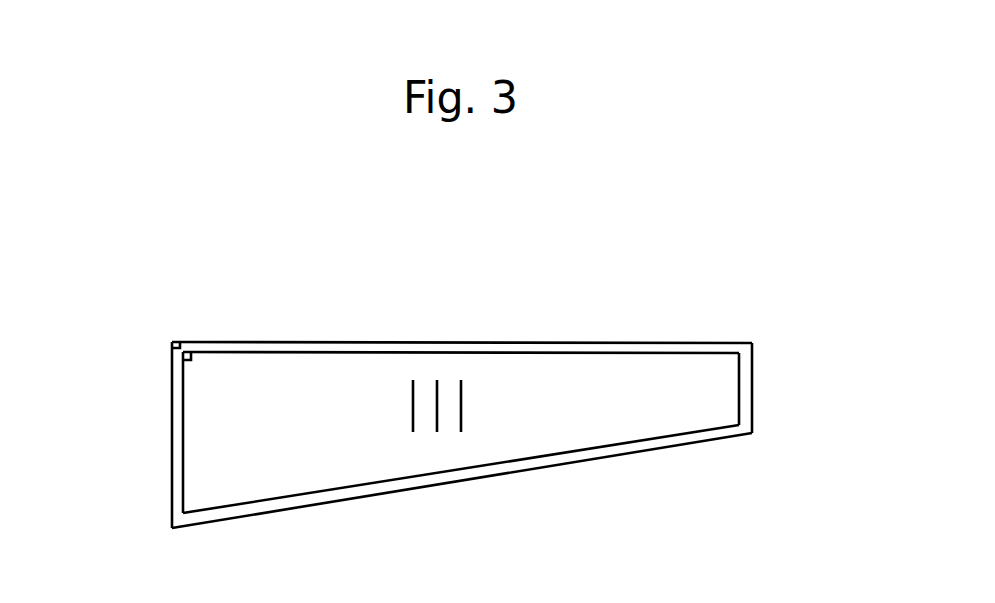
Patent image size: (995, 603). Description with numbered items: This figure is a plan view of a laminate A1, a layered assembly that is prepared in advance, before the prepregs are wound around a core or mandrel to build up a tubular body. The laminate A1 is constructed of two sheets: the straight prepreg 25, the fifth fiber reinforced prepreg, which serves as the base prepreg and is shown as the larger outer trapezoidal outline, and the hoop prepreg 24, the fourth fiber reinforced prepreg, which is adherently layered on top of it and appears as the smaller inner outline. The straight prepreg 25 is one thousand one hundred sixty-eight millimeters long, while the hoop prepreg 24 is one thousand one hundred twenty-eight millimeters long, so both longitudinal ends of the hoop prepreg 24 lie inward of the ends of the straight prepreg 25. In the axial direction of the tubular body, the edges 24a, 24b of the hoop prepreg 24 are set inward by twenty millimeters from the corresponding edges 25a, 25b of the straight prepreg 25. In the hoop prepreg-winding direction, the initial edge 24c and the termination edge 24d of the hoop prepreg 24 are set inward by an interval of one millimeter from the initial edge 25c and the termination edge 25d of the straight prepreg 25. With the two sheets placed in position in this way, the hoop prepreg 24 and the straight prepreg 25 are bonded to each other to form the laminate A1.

The hoop prepreg 24 is at (466, 409).
The edge of hoop prepreg 24a is at (739, 409).
The edge of hoop prepreg 24b is at (183, 445).
The initial edge of hoop prepreg 24c is at (416, 352).
The termination edge of hoop prepreg 24d is at (492, 466).
The straight prepreg 25 is at (466, 409).
The edge of straight prepreg 25a is at (752, 383).
The edge of straight prepreg 25b is at (172, 398).
The initial edge of straight prepreg 25c is at (507, 342).
The termination edge of straight prepreg 25d is at (577, 463).
The laminate A1 is at (300, 340).